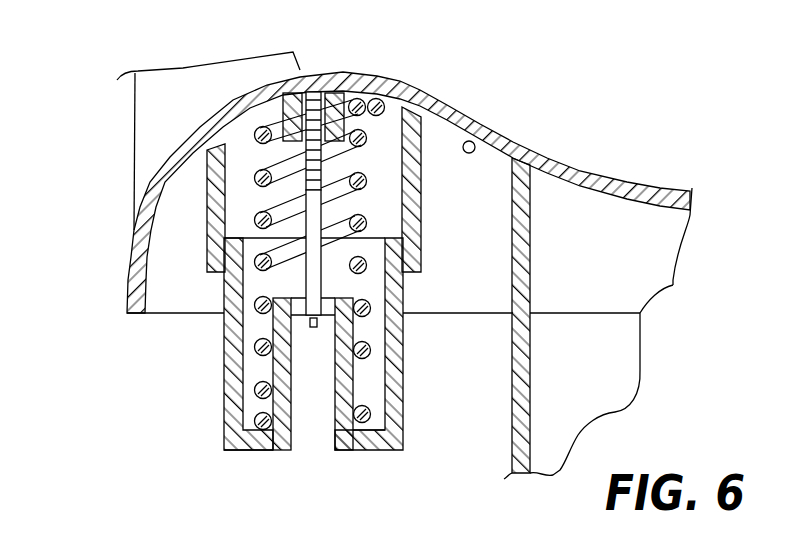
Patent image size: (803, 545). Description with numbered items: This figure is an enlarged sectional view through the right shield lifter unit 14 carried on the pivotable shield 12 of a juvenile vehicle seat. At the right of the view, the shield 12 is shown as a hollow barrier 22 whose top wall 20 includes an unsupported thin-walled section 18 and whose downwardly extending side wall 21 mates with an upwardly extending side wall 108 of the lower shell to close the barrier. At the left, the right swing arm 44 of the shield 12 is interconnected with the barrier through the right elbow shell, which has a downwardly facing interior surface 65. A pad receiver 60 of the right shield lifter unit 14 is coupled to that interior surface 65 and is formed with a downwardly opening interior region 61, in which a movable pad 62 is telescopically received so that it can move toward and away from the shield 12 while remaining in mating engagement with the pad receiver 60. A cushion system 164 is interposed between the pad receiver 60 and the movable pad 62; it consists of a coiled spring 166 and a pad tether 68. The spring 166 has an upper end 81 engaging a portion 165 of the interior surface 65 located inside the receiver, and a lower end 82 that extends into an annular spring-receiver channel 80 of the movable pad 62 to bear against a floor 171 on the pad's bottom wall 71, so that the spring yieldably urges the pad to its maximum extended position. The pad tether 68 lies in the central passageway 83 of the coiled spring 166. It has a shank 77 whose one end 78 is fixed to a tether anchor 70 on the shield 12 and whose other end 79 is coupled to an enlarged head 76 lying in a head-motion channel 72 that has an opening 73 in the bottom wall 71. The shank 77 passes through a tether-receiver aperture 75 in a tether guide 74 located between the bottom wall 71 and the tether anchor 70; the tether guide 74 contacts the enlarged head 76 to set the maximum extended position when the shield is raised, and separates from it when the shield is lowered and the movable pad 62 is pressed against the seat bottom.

The pivotable shield 12 is at (131, 147).
The right shield lifter unit 14 is at (179, 406).
The unsupported thin-walled section 18 is at (642, 184).
The top wall 20 is at (676, 185).
The downwardly extending side wall 21 is at (528, 247).
The hollow barrier 22 is at (573, 138).
The right swing arm 44 is at (243, 72).
The pad receiver 60 is at (427, 203).
The downwardly opening interior region 61 is at (384, 152).
The movable pad 62 is at (409, 396).
The downwardly facing interior surface 65 is at (190, 168).
The pad tether 68 is at (222, 252).
The tether anchor 70 is at (325, 92).
The bottom wall 71 is at (267, 453).
The head-motion channel 72 is at (299, 355).
The opening 73 is at (317, 450).
The tether guide 74 is at (286, 274).
The tether-receiver aperture 75 is at (392, 282).
The enlarged head 76 is at (385, 328).
The shank 77 is at (333, 213).
The one end 78 is at (345, 95).
The another end 79 is at (310, 320).
The annular spring-receiver channel 80 is at (366, 398).
The upper end 81 is at (265, 127).
The lower end 82 is at (254, 420).
The central passageway 83 is at (200, 152).
The upwardly extending side wall 108 is at (529, 370).
The cushion system 164 is at (241, 198).
The portion of interior surface 165 is at (388, 88).
The spring 166 is at (397, 102).
The floor 171 is at (386, 418).